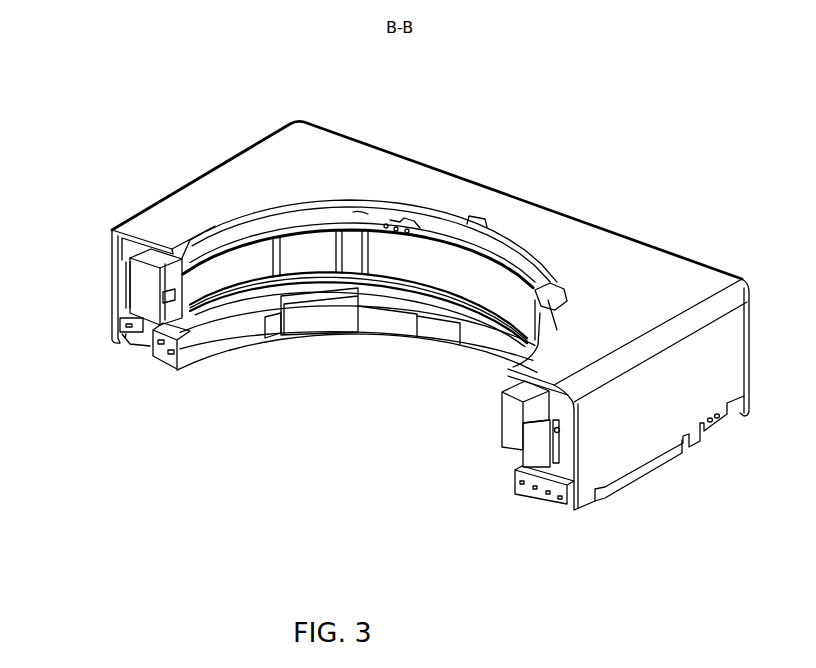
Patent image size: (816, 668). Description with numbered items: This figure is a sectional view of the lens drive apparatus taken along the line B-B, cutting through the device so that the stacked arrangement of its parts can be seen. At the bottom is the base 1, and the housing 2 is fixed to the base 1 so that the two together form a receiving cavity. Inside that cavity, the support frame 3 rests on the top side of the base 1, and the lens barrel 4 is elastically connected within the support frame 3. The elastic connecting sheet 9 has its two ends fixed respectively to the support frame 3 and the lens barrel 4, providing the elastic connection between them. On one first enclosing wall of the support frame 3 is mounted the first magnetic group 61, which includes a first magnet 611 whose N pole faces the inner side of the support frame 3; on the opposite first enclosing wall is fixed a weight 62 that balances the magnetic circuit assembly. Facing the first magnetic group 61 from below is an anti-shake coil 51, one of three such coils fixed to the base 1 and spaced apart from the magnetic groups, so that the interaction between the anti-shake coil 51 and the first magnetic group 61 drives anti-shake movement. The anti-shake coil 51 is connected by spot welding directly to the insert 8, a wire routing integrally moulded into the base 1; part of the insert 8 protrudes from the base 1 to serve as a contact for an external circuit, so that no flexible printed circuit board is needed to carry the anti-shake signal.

The base 1 is at (157, 363).
The housing 2 is at (648, 267).
The support frame 3 is at (548, 412).
The lens barrel 4 is at (433, 257).
The insert 8 is at (153, 348).
The elastic connecting sheet 9 is at (391, 218).
The anti-shake coil 51 is at (187, 333).
The first magnetic group 61 is at (145, 290).
The first magnet 611 is at (150, 308).
The weight 62 is at (540, 452).